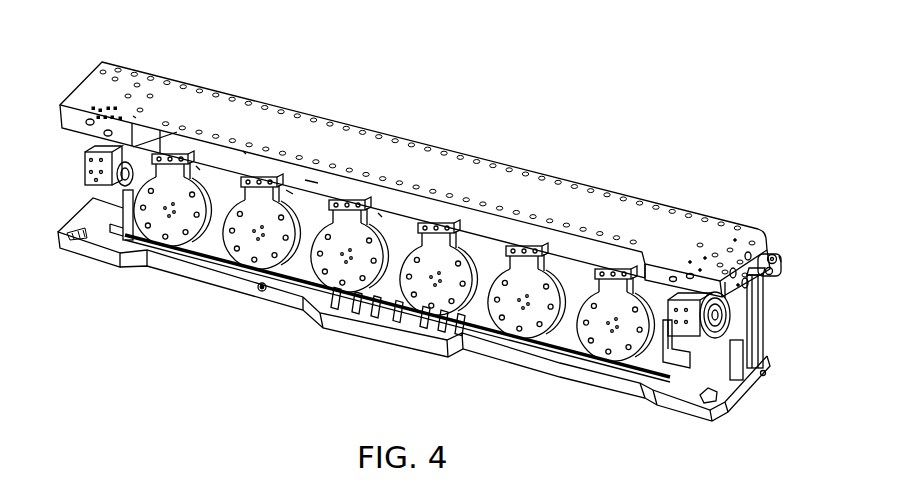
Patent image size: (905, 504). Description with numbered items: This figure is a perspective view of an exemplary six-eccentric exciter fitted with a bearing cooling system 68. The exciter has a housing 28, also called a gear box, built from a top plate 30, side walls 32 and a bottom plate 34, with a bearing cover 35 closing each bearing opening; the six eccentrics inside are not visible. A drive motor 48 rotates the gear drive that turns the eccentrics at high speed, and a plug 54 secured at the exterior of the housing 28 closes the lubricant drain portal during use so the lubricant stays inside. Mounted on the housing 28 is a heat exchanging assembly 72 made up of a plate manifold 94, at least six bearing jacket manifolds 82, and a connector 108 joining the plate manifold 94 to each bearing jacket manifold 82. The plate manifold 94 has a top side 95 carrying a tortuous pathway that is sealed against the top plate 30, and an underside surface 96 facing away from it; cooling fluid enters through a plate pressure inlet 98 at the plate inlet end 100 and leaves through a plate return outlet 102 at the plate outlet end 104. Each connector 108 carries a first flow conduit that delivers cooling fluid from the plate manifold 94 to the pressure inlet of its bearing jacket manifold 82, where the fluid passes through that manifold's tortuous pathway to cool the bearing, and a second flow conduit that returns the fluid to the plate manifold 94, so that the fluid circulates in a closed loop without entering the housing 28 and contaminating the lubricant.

The housing 28 is at (770, 317).
The top plate 30 is at (97, 93).
The side walls 32 is at (205, 246).
The bottom plate 34 is at (108, 234).
The bearing cover 35 is at (178, 234).
The drive motor 48 is at (88, 168).
The plug 54 is at (767, 373).
The bearing cooling system 68 is at (789, 258).
The heat exchanging assembly 72 is at (201, 170).
The bearing jacket manifold 82 is at (218, 244).
The plate manifold 94 is at (243, 153).
The top side 95 is at (313, 187).
The underside surface 96 is at (290, 194).
The plate pressure inlet 98 is at (775, 271).
The plate inlet end 100 is at (771, 286).
The plate return outlet 102 is at (782, 256).
The plate outlet end 104 is at (777, 243).
The connector 108 is at (170, 155).